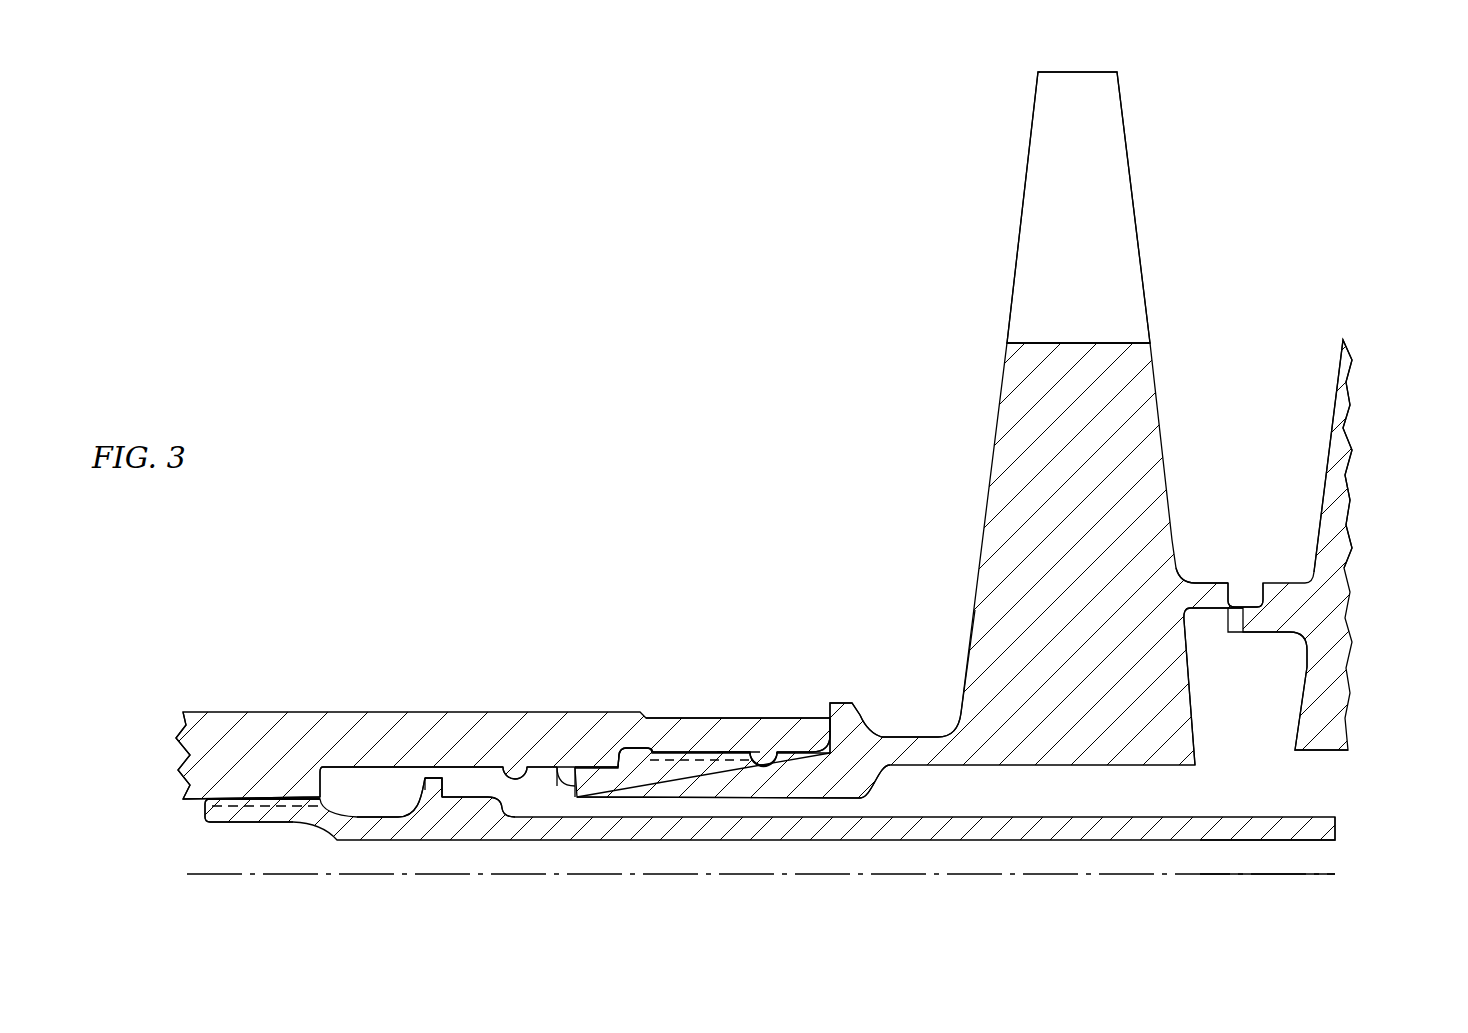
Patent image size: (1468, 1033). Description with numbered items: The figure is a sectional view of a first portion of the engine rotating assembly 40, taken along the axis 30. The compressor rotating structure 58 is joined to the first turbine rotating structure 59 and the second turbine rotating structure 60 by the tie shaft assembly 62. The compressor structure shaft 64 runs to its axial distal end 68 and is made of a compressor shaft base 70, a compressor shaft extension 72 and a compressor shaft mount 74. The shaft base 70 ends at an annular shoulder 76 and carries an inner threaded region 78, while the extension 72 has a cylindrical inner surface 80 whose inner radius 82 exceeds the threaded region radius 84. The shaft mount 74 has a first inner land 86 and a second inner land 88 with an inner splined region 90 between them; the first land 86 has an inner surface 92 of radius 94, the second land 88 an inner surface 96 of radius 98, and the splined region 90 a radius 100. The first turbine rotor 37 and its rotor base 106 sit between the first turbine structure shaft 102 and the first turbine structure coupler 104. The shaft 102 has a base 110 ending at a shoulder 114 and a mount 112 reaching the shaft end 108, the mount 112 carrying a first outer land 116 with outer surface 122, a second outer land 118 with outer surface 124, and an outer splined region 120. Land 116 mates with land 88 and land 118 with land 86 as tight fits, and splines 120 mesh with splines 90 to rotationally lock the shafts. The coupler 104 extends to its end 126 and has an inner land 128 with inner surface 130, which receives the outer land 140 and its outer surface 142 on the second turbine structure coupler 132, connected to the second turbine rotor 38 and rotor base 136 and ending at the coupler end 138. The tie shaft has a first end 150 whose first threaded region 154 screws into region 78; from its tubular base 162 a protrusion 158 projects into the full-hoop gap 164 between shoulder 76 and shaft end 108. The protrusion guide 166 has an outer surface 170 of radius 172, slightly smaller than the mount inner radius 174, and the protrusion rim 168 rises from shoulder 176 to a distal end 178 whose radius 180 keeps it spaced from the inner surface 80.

The axis 30 is at (195, 880).
The first turbine rotor 37 is at (1163, 352).
The second turbine rotor 38 is at (1343, 330).
The rotating assembly 40 is at (1332, 110).
The compressor rotating structure 58 is at (503, 706).
The first turbine rotating structure 59 is at (963, 420).
The second turbine rotating structure 60 is at (1308, 410).
The tie shaft assembly 62 is at (770, 855).
The compressor structure shaft 64 is at (275, 698).
The axial distal end of the compressor structure shaft 68 is at (862, 718).
The compressor shaft base 70 is at (205, 732).
The compressor shaft extension 72 is at (500, 765).
The compressor shaft mount 74 is at (716, 717).
The annular shoulder of the compressor structure shaft 76 is at (340, 745).
The inner threaded region 78 is at (230, 812).
The shaft extension inner surface 80 is at (538, 765).
The shaft extension inner surface radius 82 is at (387, 769).
The shaft base threaded region radius 84 is at (265, 801).
The first shaft mount inner land 86 is at (550, 857).
The second shaft mount inner land 88 is at (703, 835).
The shaft mount inner splined region 90 is at (673, 762).
The first mount land inner surface 92 is at (562, 790).
The first shaft mount inner land radius 94 is at (597, 858).
The second mount land inner surface 96 is at (790, 800).
The second shaft mount inner land radius 98 is at (807, 754).
The shaft mount inner splined region radius 100 is at (717, 756).
The first turbine structure shaft 102 is at (838, 699).
The first turbine structure coupler 104 is at (1215, 580).
The first turbine rotor base 106 is at (1100, 72).
The first turbine shaft end 108 is at (596, 765).
The first turbine shaft base 110 is at (945, 735).
The first turbine shaft mount 112 is at (858, 778).
The annular shoulder of the first turbine structure shaft 114 is at (830, 712).
The first shaft mount outer land 116 is at (762, 687).
The second shaft mount outer land 118 is at (622, 760).
The shaft mount outer splined region 120 is at (692, 760).
The first mount land outer surface 122 is at (790, 745).
The second mount land outer surface 124 is at (602, 874).
The first turbine coupler end 126 is at (1267, 590).
The coupler inner land 128 is at (1231, 684).
The coupler land inner surface 130 is at (1240, 603).
The second turbine structure coupler 132 is at (1275, 642).
The second turbine rotor base 136 is at (1345, 558).
The second turbine coupler end 138 is at (1205, 618).
The coupler outer land 140 is at (1235, 605).
The coupler land outer surface 142 is at (1090, 850).
The tie shaft first end 150 is at (205, 808).
The tie shaft first threaded region 154 is at (225, 800).
The tie shaft protrusion 158 is at (414, 780).
The tie shaft base 162 is at (1272, 842).
The gap 164 is at (562, 780).
The protrusion guide 166 is at (455, 800).
The protrusion rim 168 is at (433, 787).
The guide outer surface 170 is at (515, 772).
The guide surface outer radius 172 is at (478, 802).
The first turbine shaft mount inner radius 174 is at (698, 800).
The protrusion shoulder 176 is at (462, 797).
The protrusion distal end 178 is at (428, 776).
The protrusion distal end radius 180 is at (433, 858).